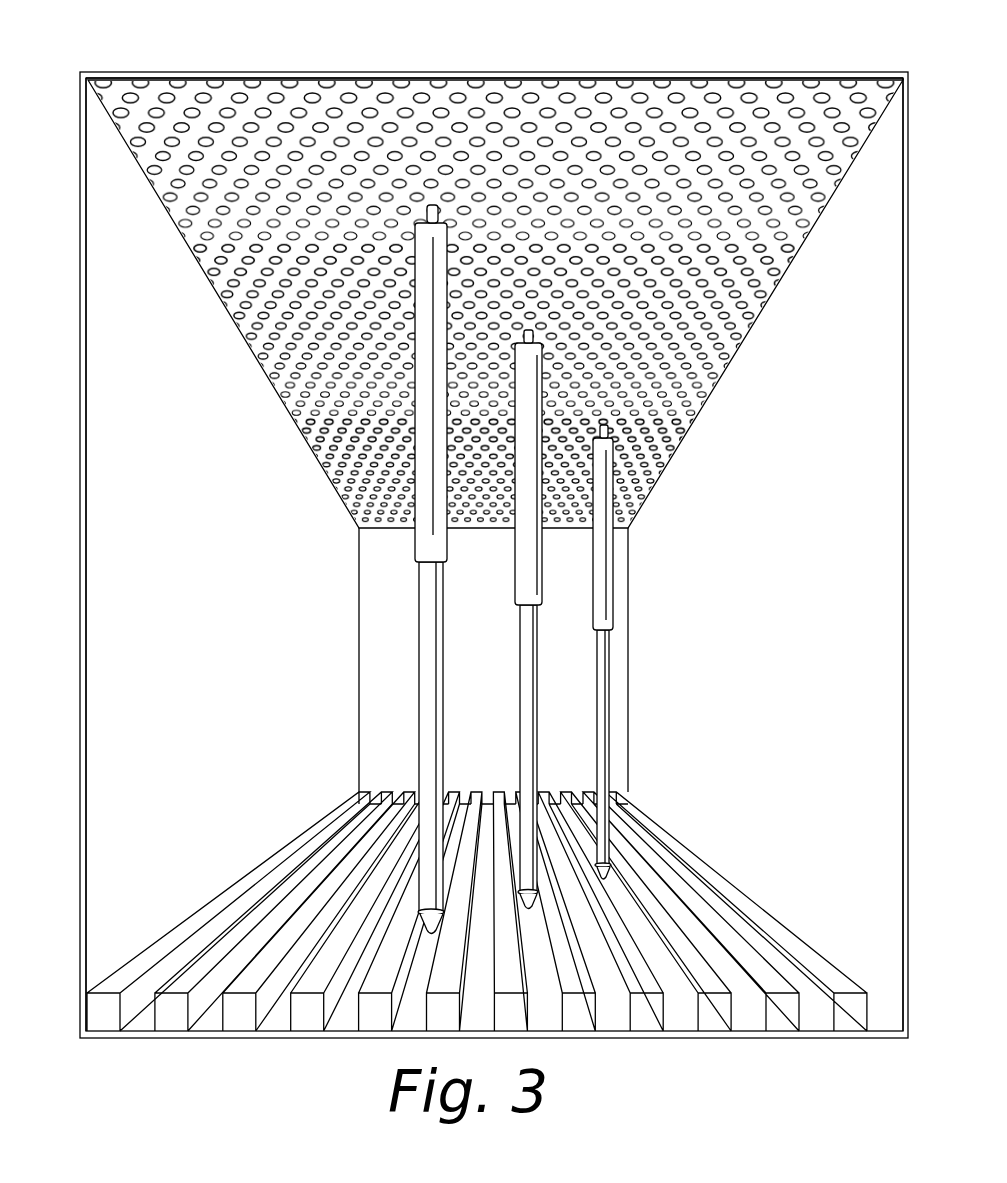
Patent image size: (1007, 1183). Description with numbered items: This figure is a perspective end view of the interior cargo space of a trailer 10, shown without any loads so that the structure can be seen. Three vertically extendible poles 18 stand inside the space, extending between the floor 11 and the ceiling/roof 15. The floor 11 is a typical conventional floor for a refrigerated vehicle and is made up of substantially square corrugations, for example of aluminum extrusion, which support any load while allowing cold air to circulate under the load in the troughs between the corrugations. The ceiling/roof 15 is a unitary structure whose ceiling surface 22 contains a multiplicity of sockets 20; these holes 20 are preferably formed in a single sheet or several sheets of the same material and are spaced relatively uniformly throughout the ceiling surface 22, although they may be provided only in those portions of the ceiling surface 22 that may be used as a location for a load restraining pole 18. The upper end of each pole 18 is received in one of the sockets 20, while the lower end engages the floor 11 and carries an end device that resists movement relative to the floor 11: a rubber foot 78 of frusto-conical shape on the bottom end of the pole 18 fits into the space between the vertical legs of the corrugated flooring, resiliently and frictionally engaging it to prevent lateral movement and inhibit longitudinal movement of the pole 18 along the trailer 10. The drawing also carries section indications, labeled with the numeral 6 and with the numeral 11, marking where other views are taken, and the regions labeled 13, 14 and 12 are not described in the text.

The trailer 10 is at (266, 70).
The ceiling surface 22 is at (498, 266).
The ceiling/roof 15 is at (443, 76).
The sockets 20 is at (525, 126).
The section line 6- 6 is at (492, 288).
The left compartment 13 is at (188, 662).
The central chamber 14 is at (495, 642).
The right compartment 12 is at (797, 655).
The poles 18 is at (520, 683).
The rubber foot 78 is at (420, 920).
The floor 11 is at (483, 882).